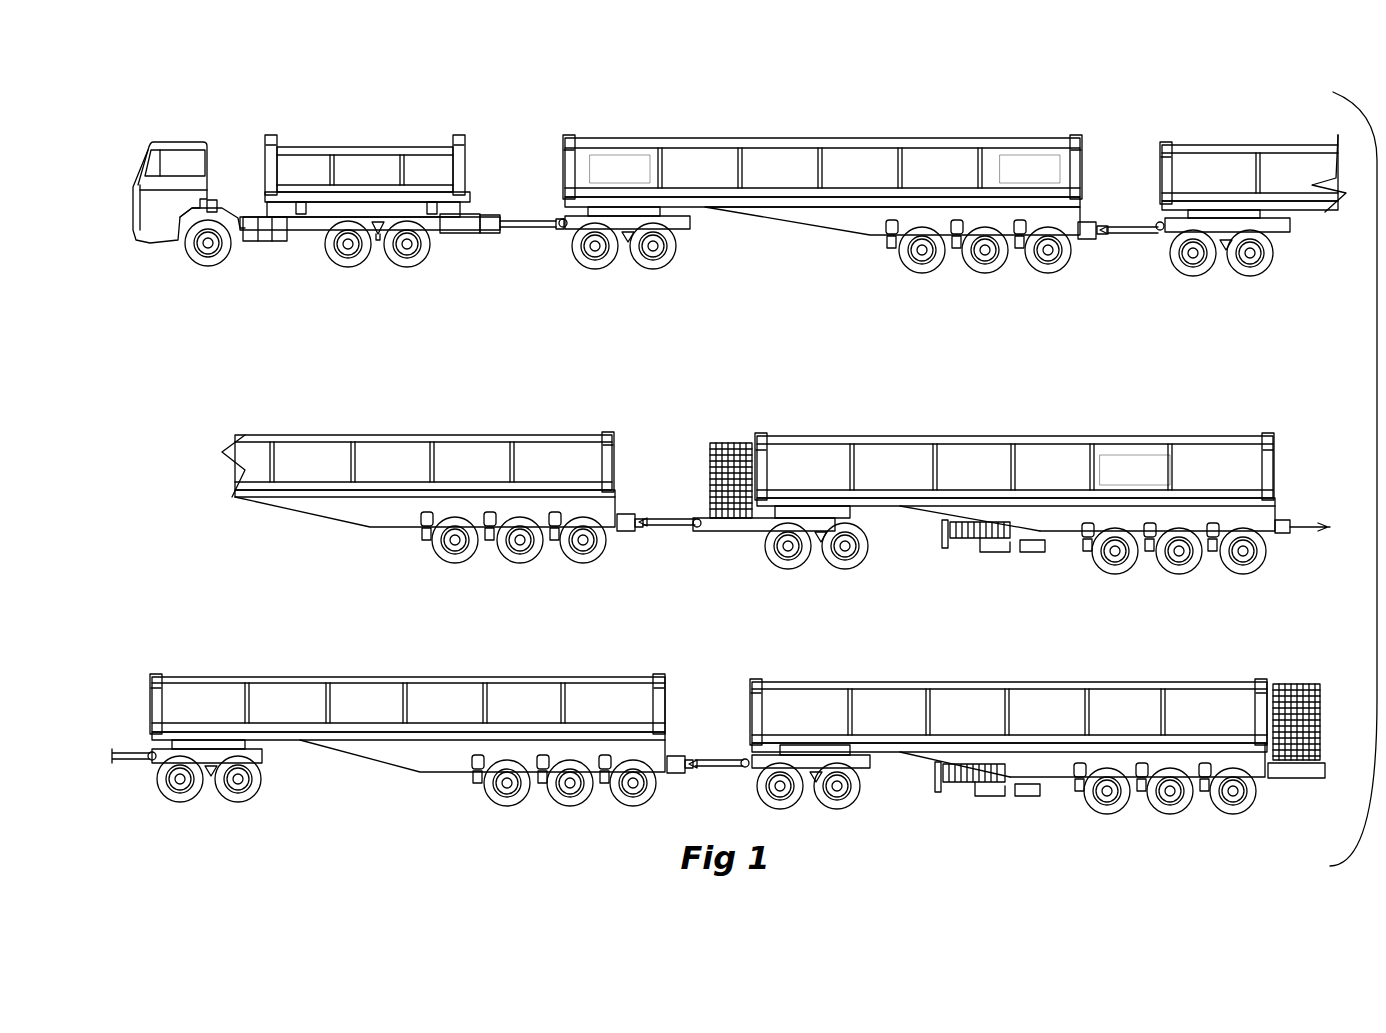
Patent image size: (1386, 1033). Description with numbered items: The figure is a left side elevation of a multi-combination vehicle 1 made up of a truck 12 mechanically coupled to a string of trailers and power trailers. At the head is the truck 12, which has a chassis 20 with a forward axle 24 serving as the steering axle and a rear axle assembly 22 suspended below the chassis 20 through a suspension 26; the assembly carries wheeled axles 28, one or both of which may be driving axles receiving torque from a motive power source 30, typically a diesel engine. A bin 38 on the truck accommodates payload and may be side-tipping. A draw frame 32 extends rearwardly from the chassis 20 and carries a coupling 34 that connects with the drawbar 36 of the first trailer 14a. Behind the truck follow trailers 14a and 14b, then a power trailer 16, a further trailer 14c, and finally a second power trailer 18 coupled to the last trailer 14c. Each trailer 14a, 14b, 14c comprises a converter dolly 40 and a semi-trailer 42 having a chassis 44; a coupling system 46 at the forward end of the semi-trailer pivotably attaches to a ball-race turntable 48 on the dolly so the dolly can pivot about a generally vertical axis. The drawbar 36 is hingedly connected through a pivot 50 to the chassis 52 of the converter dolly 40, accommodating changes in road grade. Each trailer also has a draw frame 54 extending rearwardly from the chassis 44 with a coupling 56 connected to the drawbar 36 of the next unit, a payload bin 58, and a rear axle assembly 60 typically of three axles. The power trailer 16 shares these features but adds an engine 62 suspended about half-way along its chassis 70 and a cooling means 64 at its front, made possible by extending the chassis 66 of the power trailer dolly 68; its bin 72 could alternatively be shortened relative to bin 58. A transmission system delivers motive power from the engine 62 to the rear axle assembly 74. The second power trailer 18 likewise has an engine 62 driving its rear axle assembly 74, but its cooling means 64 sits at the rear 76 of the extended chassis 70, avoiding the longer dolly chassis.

The train of road vehicles 1 is at (1357, 92).
The truck 12 is at (360, 128).
The trailer 14a is at (792, 135).
The trailer 14b is at (478, 427).
The trailer 14c is at (505, 667).
The power trailer 16 is at (990, 433).
The second power trailer 18 is at (1125, 670).
The chassis 20 is at (460, 232).
The rear axle assembly 22 is at (374, 268).
The forward axle 24 is at (196, 264).
The suspension 26 is at (380, 222).
The wheeled axles 28 is at (343, 264).
The motive power source 30 is at (213, 205).
The draw frame 32 is at (490, 214).
The coupling 34 is at (518, 230).
The drawbar 36 is at (533, 219).
The bin 38 is at (300, 168).
The converter dolly 40 is at (678, 272).
The semi-trailer 42 is at (590, 128).
The chassis 44 is at (862, 227).
The coupling system 46 is at (622, 209).
The ball-race turntable 48 is at (632, 264).
The pivot 50 is at (564, 231).
The chassis 52 is at (675, 230).
The draw frame 54 is at (1088, 223).
The coupling 56 is at (1105, 237).
The bin 58 is at (1007, 172).
The rear axle assembly 60 is at (978, 287).
The engine 62 is at (995, 557).
The cooling means 64 is at (737, 446).
The chassis 66 is at (715, 533).
The power trailer dolly 68 is at (768, 574).
The chassis 70 is at (1060, 524).
The bin 72 is at (1142, 462).
The rear axle assembly 74 is at (1085, 577).
The rear 76 is at (1293, 782).